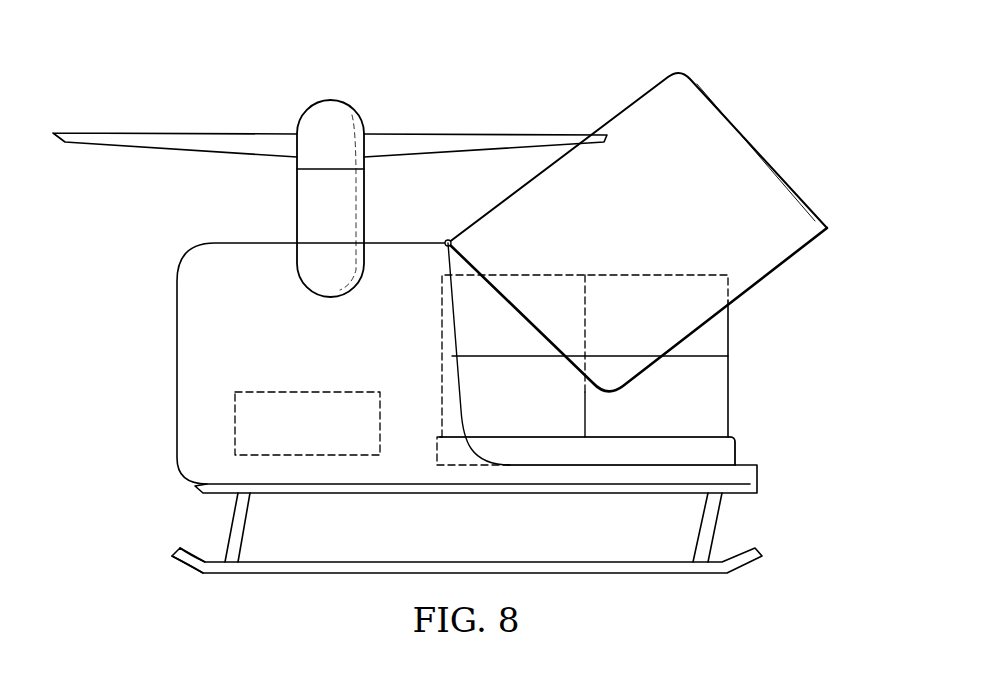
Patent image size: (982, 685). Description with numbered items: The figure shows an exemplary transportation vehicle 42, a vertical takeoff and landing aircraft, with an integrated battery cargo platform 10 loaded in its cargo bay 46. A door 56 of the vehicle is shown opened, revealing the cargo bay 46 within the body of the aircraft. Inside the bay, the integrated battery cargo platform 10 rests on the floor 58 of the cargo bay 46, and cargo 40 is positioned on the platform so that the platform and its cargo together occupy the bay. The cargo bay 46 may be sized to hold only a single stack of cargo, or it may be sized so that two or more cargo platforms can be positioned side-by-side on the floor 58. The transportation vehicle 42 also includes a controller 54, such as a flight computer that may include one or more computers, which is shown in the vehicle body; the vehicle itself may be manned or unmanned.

The transportation vehicle 42 is at (238, 86).
The door 56 is at (774, 153).
The cargo bay 46 is at (773, 315).
The cargo 40 is at (730, 375).
The integrated battery cargo platform 10 is at (703, 433).
The floor 58 is at (752, 458).
The controller 54 is at (267, 392).